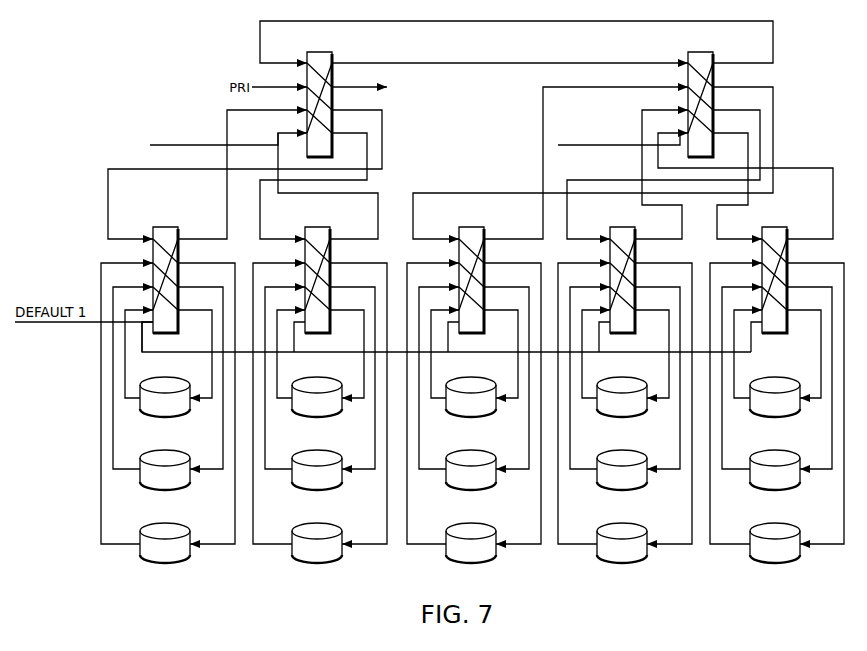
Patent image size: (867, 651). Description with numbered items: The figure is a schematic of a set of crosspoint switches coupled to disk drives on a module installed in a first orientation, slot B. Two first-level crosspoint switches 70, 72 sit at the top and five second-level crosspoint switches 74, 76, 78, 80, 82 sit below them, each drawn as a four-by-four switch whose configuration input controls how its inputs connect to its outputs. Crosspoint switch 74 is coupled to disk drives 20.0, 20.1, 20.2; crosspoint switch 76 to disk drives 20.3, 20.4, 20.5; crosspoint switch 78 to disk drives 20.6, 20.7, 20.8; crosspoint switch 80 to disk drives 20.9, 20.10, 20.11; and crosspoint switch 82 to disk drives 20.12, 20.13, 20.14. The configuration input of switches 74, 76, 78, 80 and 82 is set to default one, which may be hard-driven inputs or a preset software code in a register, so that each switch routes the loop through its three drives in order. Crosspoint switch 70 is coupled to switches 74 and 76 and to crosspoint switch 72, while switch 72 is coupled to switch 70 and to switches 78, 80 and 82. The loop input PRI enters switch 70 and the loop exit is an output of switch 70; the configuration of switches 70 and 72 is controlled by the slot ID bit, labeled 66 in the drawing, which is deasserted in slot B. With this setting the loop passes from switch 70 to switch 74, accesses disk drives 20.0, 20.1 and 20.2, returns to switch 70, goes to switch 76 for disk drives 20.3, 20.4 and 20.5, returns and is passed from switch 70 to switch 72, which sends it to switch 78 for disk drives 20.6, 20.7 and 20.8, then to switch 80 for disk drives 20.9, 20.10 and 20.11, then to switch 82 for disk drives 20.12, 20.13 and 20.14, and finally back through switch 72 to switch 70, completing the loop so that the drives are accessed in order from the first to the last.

The slot ID signal 66 is at (179, 121).
The crosspoint switch 70 is at (321, 96).
The crosspoint switch 72 is at (702, 96).
The crosspoint switch 74 is at (168, 377).
The crosspoint switch 76 is at (320, 377).
The crosspoint switch 78 is at (474, 377).
The crosspoint switch 80 is at (625, 377).
The crosspoint switch 82 is at (777, 377).
The disk drive 20.0 is at (165, 408).
The disk drive 20.1 is at (165, 481).
The disk drive 20.2 is at (165, 554).
The disk drive 20.3 is at (317, 408).
The disk drive 20.4 is at (317, 481).
The disk drive 20.5 is at (317, 554).
The disk drive 20.6 is at (471, 408).
The disk drive 20.7 is at (471, 481).
The disk drive 20.8 is at (471, 554).
The disk drive 20.9 is at (622, 408).
The disk drive 20.10 is at (622, 481).
The disk drive 20.11 is at (622, 554).
The disk drive 20.12 is at (775, 408).
The disk drive 20.13 is at (775, 481).
The disk drive 20.14 is at (775, 554).